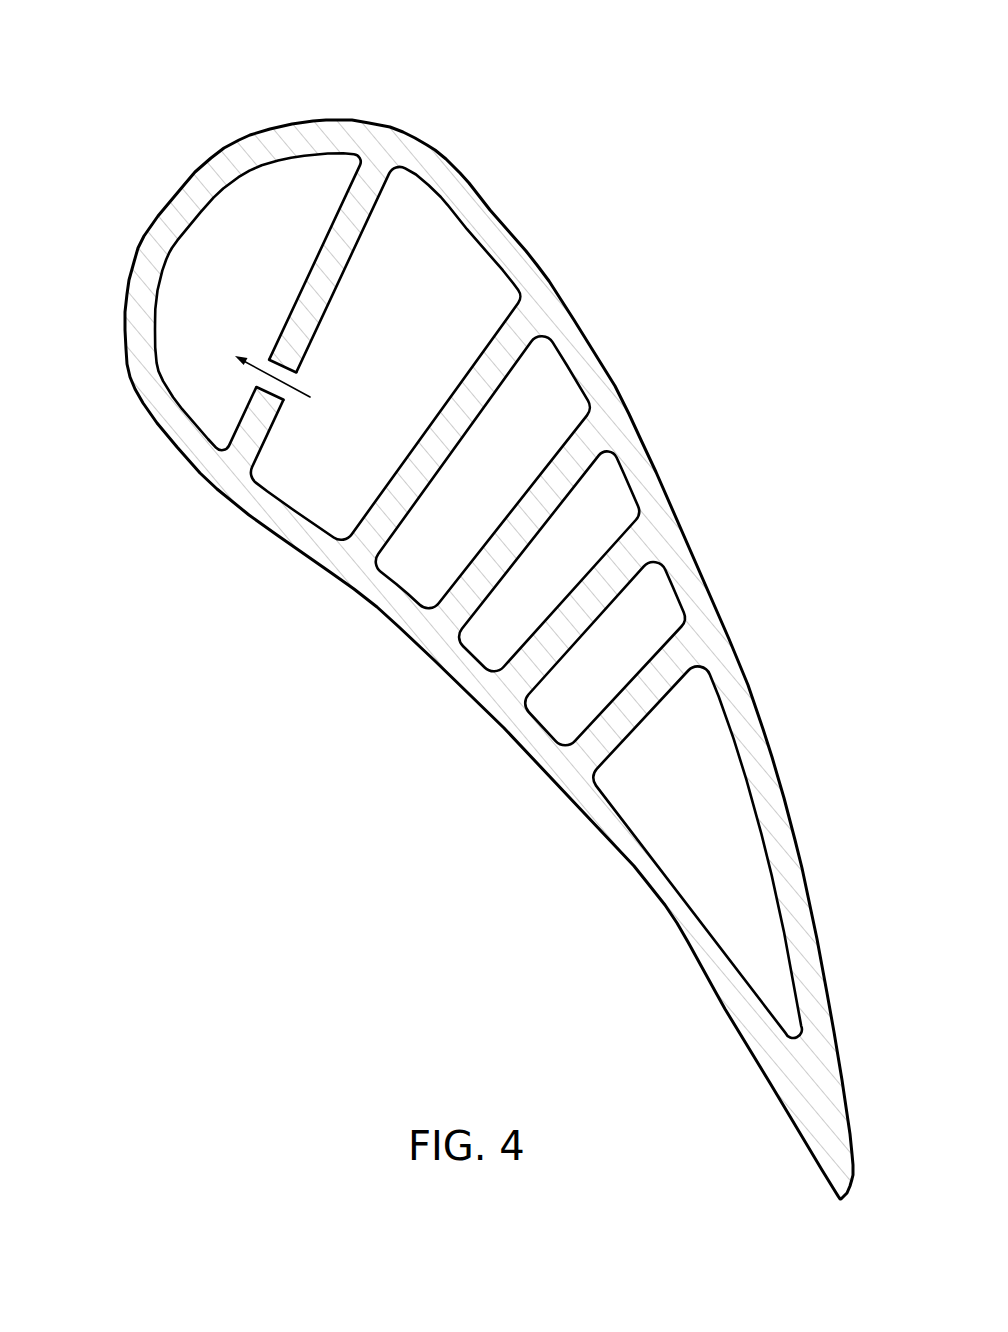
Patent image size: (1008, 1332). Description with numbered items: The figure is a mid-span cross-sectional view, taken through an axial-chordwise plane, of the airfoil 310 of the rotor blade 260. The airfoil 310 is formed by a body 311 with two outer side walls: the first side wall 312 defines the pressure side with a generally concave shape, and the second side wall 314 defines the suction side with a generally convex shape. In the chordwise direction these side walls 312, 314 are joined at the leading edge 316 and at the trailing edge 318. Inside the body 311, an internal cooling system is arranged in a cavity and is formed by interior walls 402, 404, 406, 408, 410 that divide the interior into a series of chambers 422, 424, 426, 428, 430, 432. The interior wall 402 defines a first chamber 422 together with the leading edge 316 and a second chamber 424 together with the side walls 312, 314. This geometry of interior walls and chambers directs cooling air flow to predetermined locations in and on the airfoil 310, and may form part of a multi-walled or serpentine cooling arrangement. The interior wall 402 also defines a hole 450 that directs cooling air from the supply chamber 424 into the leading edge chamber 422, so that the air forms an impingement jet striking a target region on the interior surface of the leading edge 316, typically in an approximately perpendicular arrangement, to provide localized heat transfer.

The rotor blade 260 is at (245, 95).
The airfoil 310 is at (547, 267).
The body 311 is at (790, 1068).
The first side wall 312 is at (316, 565).
The second side wall 314 is at (638, 432).
The leading edge 316 is at (127, 292).
The trailing edge 318 is at (843, 1200).
The interior wall 402 is at (320, 247).
The interior wall 404 is at (470, 370).
The interior wall 406 is at (533, 480).
The interior wall 408 is at (598, 562).
The interior wall 410 is at (653, 657).
The first chamber 422 is at (198, 250).
The second chamber 424 is at (302, 491).
The chamber 426 is at (406, 573).
The chamber 428 is at (488, 644).
The chamber 430 is at (547, 713).
The chamber 432 is at (718, 764).
The hole 450 is at (268, 368).